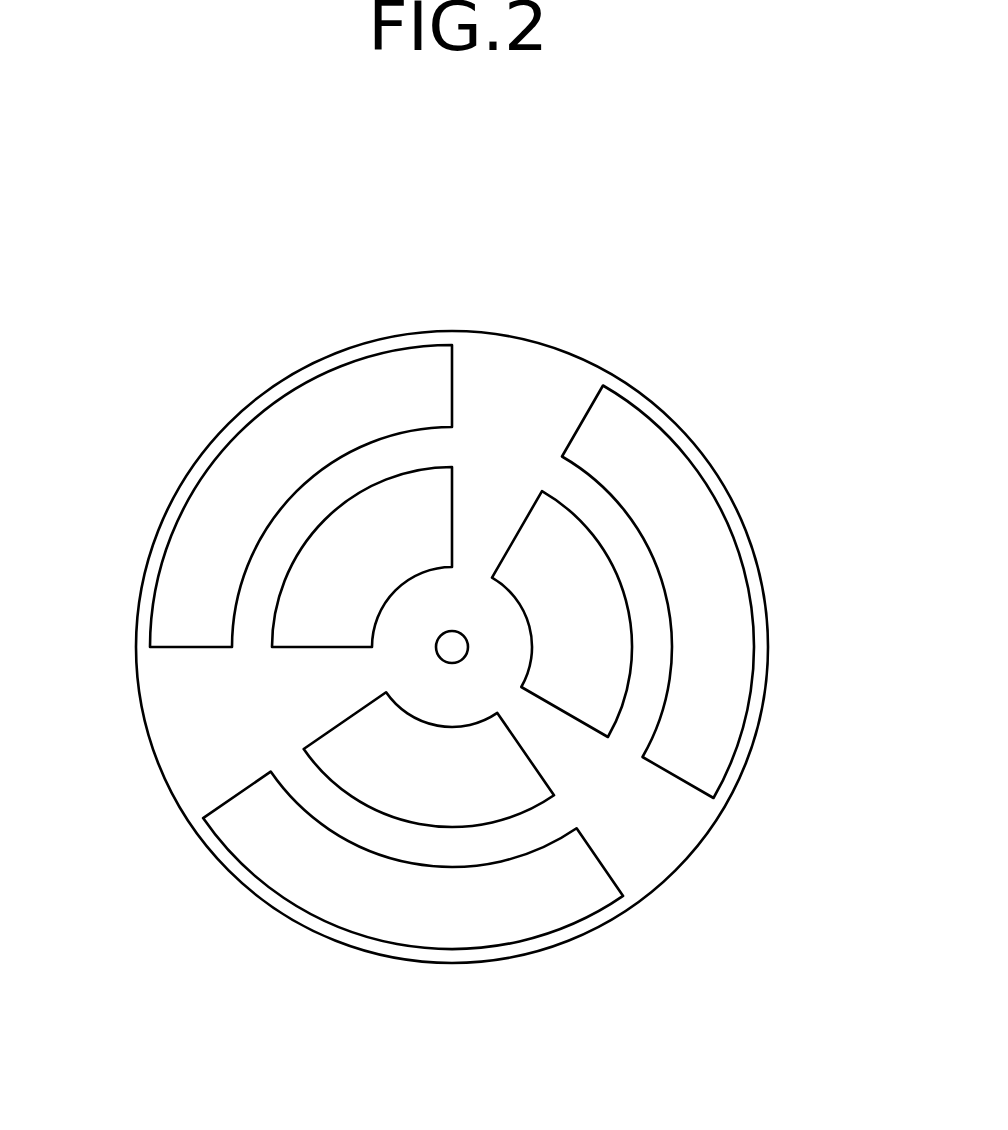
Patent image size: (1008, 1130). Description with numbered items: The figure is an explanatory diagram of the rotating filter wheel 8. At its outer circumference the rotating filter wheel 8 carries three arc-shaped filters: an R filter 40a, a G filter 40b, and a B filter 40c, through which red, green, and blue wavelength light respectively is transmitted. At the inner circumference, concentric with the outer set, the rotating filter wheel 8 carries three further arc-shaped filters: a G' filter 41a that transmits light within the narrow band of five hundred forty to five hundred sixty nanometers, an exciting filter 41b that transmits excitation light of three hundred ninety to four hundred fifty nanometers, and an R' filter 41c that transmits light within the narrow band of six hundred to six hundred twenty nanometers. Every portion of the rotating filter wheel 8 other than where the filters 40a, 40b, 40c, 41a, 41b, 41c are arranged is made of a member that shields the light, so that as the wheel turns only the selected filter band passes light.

The rotating filter wheel 8 is at (657, 838).
The R filter 40a is at (660, 477).
The G filter 40b is at (493, 912).
The B filter 40c is at (198, 550).
The G' filter 41a is at (588, 648).
The exciting filter 41b is at (382, 765).
The R' filter 41c is at (383, 527).